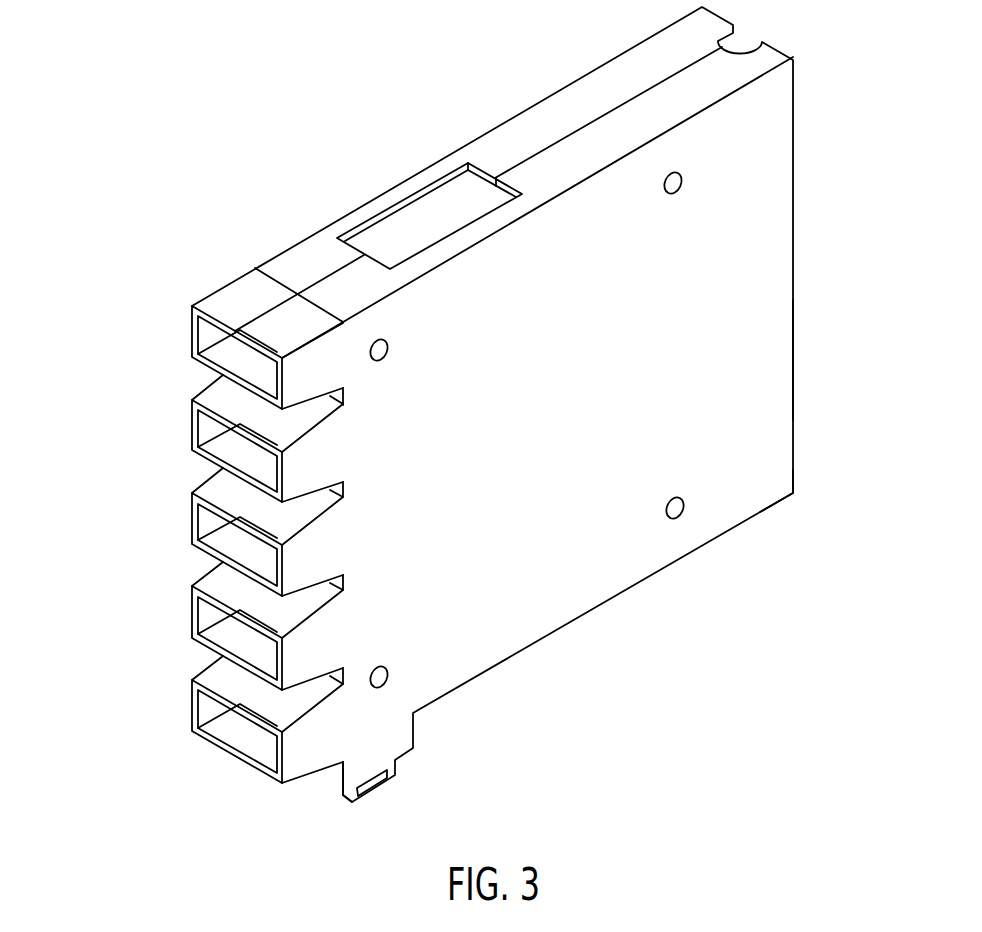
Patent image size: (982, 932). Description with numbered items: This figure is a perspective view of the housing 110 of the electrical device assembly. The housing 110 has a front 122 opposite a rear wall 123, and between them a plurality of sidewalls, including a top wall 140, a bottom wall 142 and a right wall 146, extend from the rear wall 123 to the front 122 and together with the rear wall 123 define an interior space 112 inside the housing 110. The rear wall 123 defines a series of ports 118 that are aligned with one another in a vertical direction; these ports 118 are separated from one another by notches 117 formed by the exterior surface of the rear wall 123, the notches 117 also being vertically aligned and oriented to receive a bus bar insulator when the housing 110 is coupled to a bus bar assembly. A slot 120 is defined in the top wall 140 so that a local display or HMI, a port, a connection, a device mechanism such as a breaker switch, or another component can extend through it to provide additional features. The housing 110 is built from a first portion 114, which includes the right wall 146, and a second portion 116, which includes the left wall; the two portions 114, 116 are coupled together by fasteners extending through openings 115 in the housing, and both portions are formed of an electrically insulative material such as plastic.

The housing 110 is at (190, 248).
The interior space 112 is at (213, 335).
The first portion 114 is at (550, 562).
The openings 115 is at (683, 512).
The second portion 116 is at (622, 73).
The notches 117 is at (305, 412).
The ports 118 is at (240, 358).
The slot 120 is at (408, 225).
The front 122 is at (795, 140).
The rear wall 123 is at (188, 768).
The top wall 140 is at (512, 138).
The bottom wall 142 is at (780, 498).
The right wall 146 is at (742, 353).